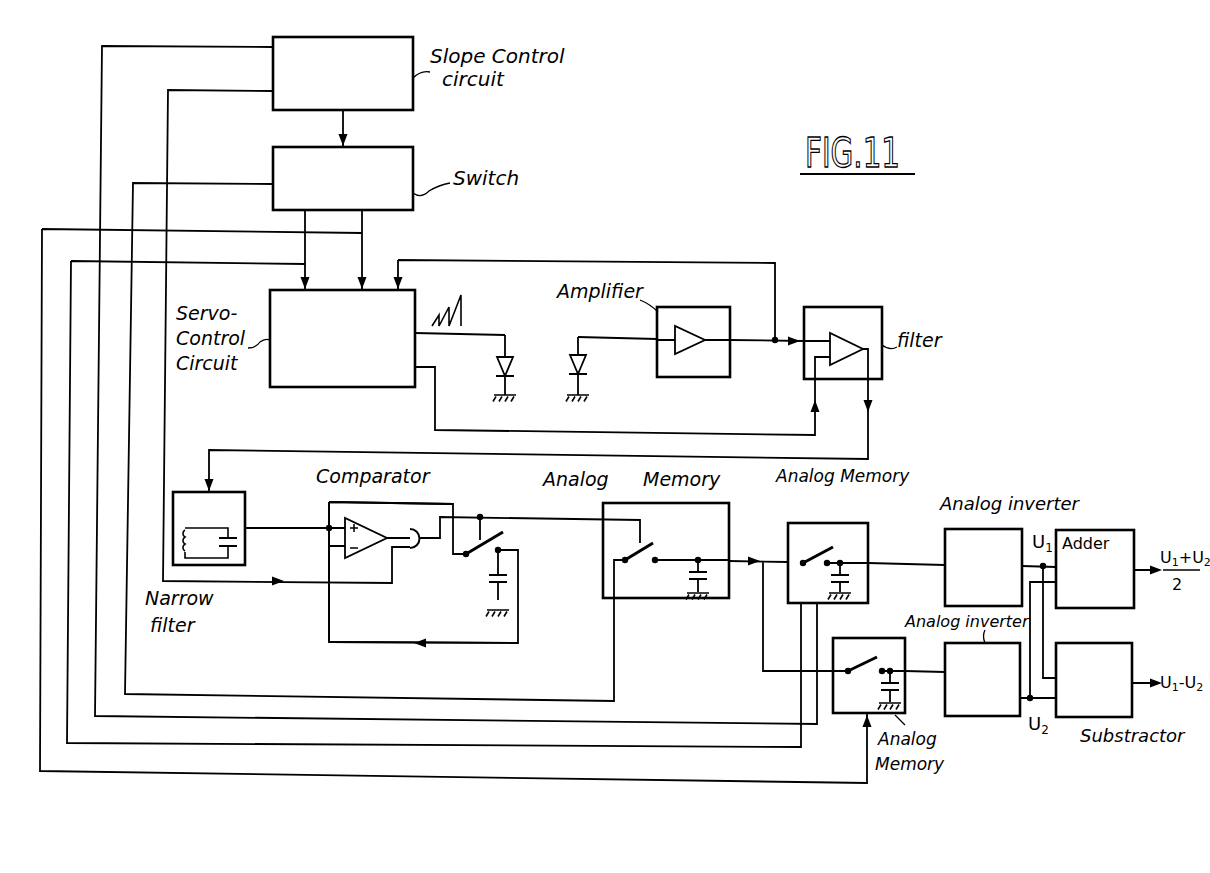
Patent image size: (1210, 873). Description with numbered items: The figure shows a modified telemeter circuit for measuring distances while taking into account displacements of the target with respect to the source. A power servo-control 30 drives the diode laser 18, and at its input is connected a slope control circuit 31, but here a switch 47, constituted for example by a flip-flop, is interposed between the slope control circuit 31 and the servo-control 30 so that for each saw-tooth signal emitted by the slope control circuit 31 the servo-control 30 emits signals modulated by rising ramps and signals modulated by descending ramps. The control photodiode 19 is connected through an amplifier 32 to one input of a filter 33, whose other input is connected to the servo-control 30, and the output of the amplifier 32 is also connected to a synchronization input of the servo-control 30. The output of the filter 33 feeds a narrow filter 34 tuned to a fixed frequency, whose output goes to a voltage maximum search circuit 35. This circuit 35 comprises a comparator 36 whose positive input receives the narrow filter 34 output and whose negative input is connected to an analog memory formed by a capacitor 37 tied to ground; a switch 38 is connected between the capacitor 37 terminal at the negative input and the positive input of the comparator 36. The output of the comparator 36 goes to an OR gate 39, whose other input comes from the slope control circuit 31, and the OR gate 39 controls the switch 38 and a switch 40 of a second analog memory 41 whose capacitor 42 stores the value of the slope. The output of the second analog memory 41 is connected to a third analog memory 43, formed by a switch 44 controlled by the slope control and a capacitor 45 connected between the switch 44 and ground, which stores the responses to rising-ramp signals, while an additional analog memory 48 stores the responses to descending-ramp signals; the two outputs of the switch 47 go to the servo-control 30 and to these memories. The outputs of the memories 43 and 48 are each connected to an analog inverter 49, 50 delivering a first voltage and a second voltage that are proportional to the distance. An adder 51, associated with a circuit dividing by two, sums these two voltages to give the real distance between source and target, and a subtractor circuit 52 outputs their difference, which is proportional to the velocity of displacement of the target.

The diode laser 18 is at (509, 357).
The control photodiode 19 is at (585, 369).
The power servo-control circuit 30 is at (367, 341).
The slope control circuit 31 is at (343, 73).
The amplifier 32 is at (697, 307).
The filter 33 is at (859, 307).
The narrow filter 34 is at (234, 504).
The voltage maximum search circuit 35 is at (427, 503).
The comparator 36 is at (372, 532).
The capacitor 37 is at (509, 578).
The switch 38 is at (472, 557).
The OR gate 39 is at (418, 549).
The switch 40 is at (647, 539).
The second analog memory 41 is at (709, 504).
The capacitor 42 is at (690, 574).
The third analog memory 43 is at (850, 522).
The switch 44 is at (806, 532).
The capacitor 45 is at (846, 580).
The switch 47 is at (343, 178).
The additional analog memory 48 is at (833, 692).
The analog inverter 49 is at (983, 567).
The analog inverter 50 is at (982, 679).
The adder 51 is at (1095, 569).
The subtractor circuit 52 is at (1094, 680).